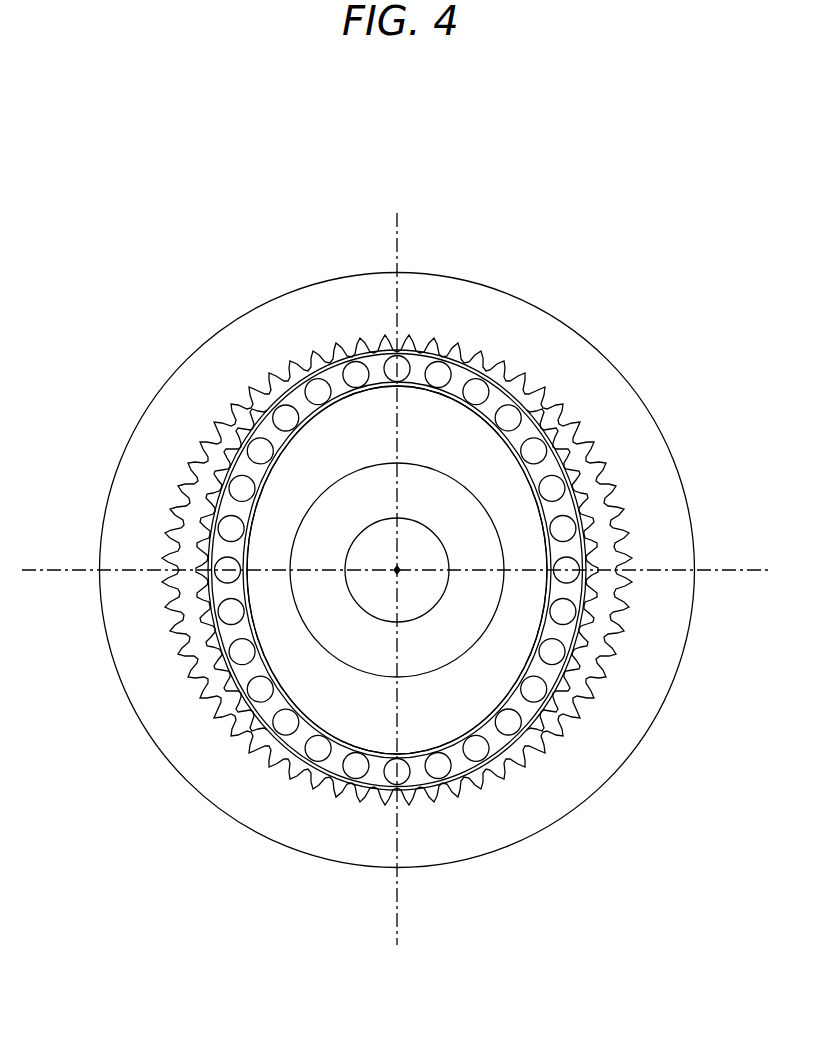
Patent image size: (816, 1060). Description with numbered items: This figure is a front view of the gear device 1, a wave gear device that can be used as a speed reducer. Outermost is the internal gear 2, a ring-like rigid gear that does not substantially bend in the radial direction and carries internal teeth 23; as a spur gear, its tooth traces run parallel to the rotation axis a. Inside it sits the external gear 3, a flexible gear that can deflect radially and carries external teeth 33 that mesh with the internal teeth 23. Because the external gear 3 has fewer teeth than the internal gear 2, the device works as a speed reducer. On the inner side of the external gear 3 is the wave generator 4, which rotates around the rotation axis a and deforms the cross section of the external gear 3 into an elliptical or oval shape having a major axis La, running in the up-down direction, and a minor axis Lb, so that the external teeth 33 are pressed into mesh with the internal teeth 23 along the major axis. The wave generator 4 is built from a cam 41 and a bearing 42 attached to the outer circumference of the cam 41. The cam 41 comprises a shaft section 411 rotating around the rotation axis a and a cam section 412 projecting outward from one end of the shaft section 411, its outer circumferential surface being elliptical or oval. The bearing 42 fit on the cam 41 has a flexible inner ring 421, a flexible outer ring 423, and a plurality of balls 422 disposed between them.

The gear device 1 is at (612, 147).
The internal gear 2 is at (578, 324).
The internal teeth 23 is at (613, 640).
The external gear 3 is at (614, 534).
The external teeth 33 is at (600, 673).
The wave generator 4 is at (308, 785).
The cam 41 is at (68, 719).
The shaft section 411 is at (312, 650).
The cam section 412 is at (325, 698).
The bearing 42 is at (618, 859).
The inner ring 421 is at (507, 775).
The balls 422 is at (487, 788).
The outer ring 423 is at (460, 795).
The rotation axis a is at (395, 569).
The major axis La is at (400, 239).
The minor axis Lb is at (737, 573).